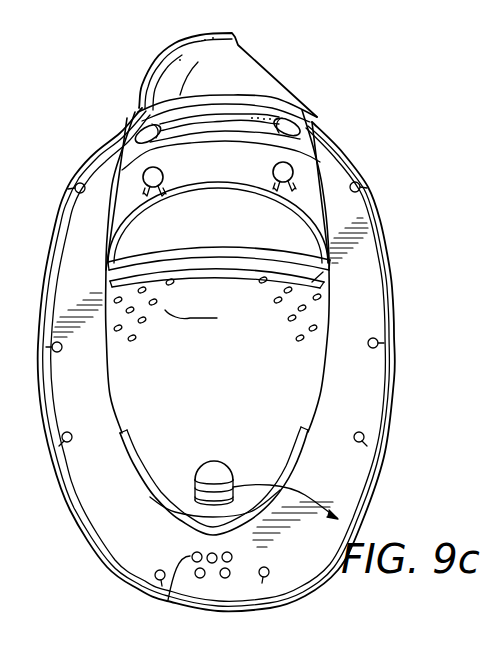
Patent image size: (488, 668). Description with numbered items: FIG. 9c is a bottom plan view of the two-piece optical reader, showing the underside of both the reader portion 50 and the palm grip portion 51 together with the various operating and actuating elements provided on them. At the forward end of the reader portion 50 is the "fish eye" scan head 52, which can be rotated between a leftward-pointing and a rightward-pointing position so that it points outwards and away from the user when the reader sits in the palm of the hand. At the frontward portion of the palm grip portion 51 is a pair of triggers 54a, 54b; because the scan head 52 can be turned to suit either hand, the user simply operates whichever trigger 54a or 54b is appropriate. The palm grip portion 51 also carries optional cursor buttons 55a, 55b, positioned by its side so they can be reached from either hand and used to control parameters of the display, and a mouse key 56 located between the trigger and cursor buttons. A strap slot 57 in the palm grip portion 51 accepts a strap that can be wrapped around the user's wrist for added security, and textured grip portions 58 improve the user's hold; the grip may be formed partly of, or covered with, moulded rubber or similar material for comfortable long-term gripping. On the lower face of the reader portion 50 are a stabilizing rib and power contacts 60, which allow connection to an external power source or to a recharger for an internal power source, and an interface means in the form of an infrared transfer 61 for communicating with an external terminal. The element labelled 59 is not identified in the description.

The reader portion 50 is at (130, 537).
The palm grip portion 51 is at (291, 393).
The scan head 52 is at (175, 75).
The trigger 54a is at (122, 217).
The trigger 54b is at (304, 192).
The cursor button 55a is at (143, 130).
The cursor button 55b is at (284, 170).
The mouse key 56 is at (223, 153).
The strap slot 57 is at (223, 487).
The textured grip portions 58 is at (217, 318).
The channel 59 is at (257, 117).
The power contacts 60 is at (218, 577).
The infrared transfer 61 is at (167, 599).